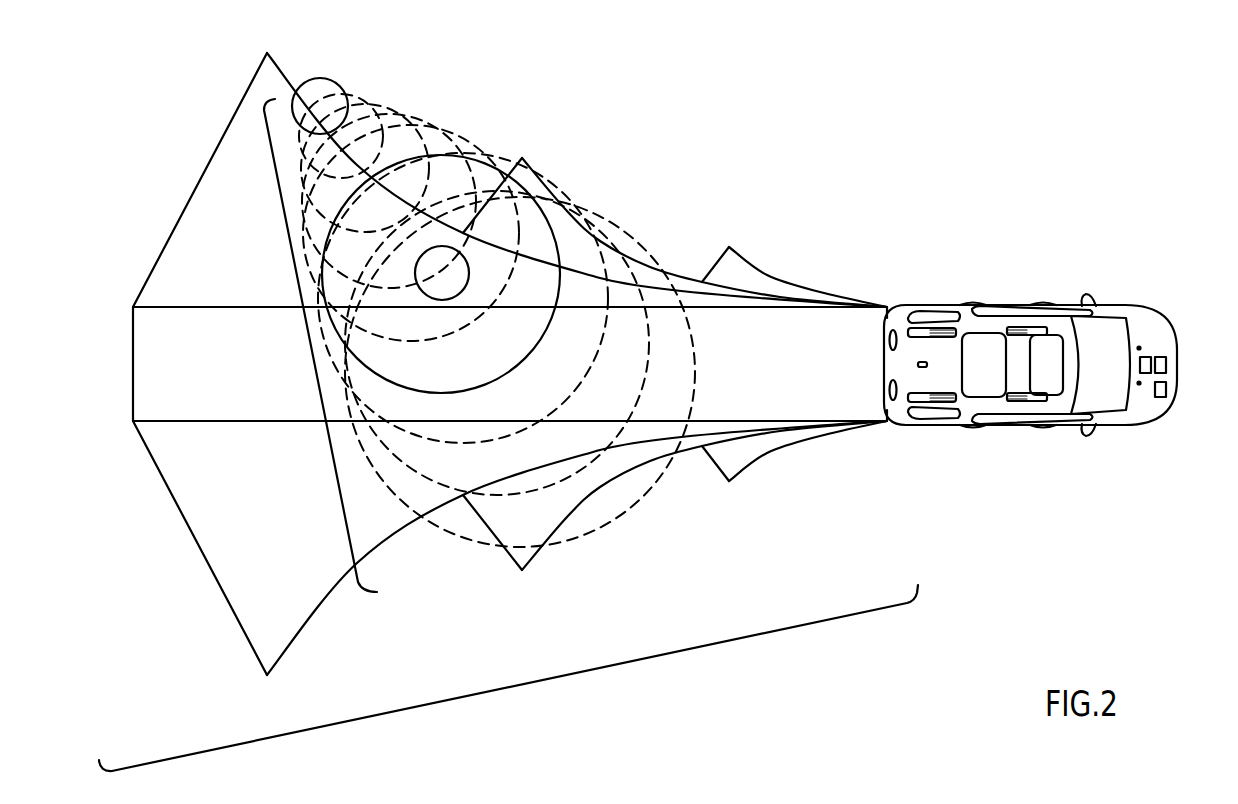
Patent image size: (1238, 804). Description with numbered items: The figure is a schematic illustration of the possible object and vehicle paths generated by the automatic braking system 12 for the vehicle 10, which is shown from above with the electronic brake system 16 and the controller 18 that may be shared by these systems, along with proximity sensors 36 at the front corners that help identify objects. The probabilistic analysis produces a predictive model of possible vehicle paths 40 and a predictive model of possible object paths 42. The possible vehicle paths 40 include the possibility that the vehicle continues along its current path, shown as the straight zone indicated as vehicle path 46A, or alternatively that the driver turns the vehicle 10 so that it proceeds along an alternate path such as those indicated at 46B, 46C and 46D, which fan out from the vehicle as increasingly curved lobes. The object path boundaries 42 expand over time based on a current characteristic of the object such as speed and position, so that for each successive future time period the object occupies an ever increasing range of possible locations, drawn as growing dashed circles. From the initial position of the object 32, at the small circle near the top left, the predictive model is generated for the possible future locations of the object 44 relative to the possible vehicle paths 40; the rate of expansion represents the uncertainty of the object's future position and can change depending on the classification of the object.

The vehicle 10 is at (1035, 273).
The automatic braking system 12 is at (1166, 394).
The electronic brake system 16 is at (1167, 365).
The controller 18 is at (1144, 355).
The initial position of the object 32 is at (335, 88).
The proximity sensors 36 is at (887, 307).
The possible vehicle paths 40 is at (510, 687).
The possible object paths 42 is at (309, 346).
The possible future locations of the object 44 is at (472, 273).
The vehicle path 46A is at (208, 421).
The alternate path 46B is at (308, 626).
The alternate path 46C is at (561, 516).
The alternate path 46D is at (762, 457).